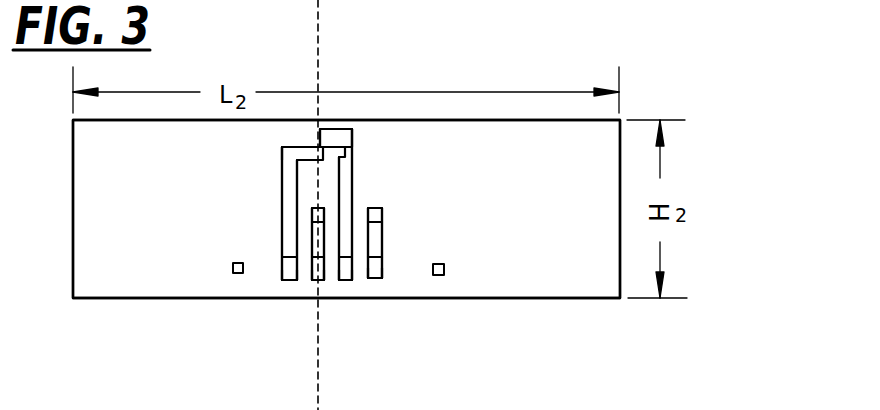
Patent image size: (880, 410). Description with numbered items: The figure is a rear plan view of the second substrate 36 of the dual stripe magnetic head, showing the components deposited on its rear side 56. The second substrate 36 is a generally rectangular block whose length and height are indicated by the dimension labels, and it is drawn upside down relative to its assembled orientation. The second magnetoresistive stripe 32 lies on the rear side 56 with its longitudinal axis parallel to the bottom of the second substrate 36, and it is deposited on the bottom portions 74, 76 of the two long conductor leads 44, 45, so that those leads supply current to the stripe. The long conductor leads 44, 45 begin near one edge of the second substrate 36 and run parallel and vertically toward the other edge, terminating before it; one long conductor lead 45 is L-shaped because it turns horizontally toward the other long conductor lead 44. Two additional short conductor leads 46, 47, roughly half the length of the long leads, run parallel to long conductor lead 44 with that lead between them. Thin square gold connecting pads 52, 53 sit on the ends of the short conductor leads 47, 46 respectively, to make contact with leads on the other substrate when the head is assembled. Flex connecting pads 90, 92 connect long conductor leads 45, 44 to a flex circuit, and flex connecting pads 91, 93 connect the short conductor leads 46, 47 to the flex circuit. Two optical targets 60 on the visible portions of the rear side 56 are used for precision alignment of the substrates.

The second magnetoresistive stripe 32 is at (340, 138).
The second substrate 36 is at (692, 81).
The long conductor lead 44 is at (348, 187).
The long conductor lead 45 is at (289, 175).
The short conductor lead 46 is at (320, 243).
The short conductor lead 47 is at (378, 238).
The connecting pad 52 is at (377, 215).
The connecting pad 53 is at (320, 217).
The rear side 56 is at (556, 282).
The optical targets 60 is at (233, 273).
The bottom portion of long conductor lead 74 is at (353, 138).
The bottom portion of long conductor lead 76 is at (294, 146).
The flex connecting pad 90 is at (282, 279).
The flex connecting pad 91 is at (312, 277).
The flex connecting pad 92 is at (352, 278).
The flex connecting pad 93 is at (382, 276).